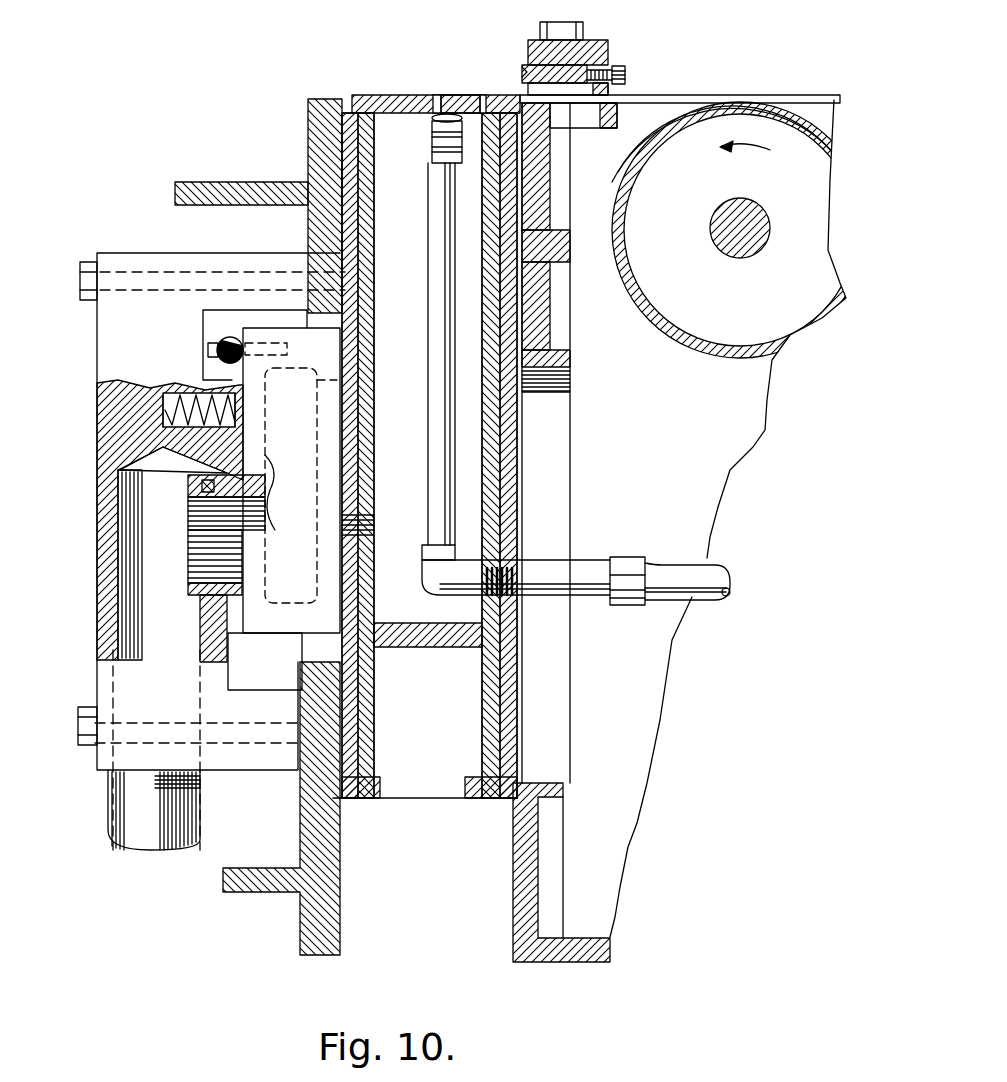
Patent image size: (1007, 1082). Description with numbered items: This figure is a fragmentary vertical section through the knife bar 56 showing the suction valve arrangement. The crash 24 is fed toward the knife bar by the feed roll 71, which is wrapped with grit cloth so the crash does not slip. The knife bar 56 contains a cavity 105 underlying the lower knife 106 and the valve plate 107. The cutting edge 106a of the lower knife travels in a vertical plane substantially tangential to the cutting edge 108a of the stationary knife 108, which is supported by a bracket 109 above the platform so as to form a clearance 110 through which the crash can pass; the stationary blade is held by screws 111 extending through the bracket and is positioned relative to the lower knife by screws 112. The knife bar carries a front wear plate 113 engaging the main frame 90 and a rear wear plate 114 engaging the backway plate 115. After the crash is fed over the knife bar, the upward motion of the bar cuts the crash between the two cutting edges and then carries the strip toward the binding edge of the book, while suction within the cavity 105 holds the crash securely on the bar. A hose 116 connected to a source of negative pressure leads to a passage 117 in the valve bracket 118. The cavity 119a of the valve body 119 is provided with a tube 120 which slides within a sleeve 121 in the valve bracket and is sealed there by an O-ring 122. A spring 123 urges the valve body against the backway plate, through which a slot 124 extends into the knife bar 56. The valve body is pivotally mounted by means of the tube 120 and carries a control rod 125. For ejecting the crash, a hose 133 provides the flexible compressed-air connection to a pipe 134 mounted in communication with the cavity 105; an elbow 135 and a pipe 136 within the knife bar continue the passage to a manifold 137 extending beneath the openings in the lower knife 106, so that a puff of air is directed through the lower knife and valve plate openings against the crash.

The crash 24 is at (700, 97).
The knife bar 56 is at (425, 472).
The feed roll 71 is at (655, 140).
The main frame 90 is at (530, 953).
The cavity 105 is at (398, 199).
The lower knife 106 is at (400, 95).
The cutting edge 106a is at (527, 97).
The valve plate 107 is at (470, 95).
The stationary knife 108 is at (554, 74).
The cutting edge 108a is at (525, 74).
The bracket 109 is at (608, 52).
The clearance 110 is at (568, 96).
The screws 111 is at (583, 30).
The screws 112 is at (626, 73).
The front wear plate 113 is at (511, 799).
The rear wear plate 114 is at (345, 799).
The backway plate 115 is at (303, 950).
The hose 116 is at (120, 822).
The passage 117 is at (167, 606).
The valve bracket 118 is at (97, 627).
The valve body 119 is at (262, 625).
The cavity 119a is at (298, 373).
The tube 120 is at (190, 490).
The sleeve 121 is at (208, 473).
The O-ring 122 is at (205, 600).
The spring 123 is at (186, 395).
The slot 124 is at (372, 528).
The control rod 125 is at (219, 341).
The hose 133 is at (724, 594).
The pipe 134 is at (581, 590).
The elbow 135 is at (438, 573).
The pipe 136 is at (438, 443).
The manifold 137 is at (434, 132).